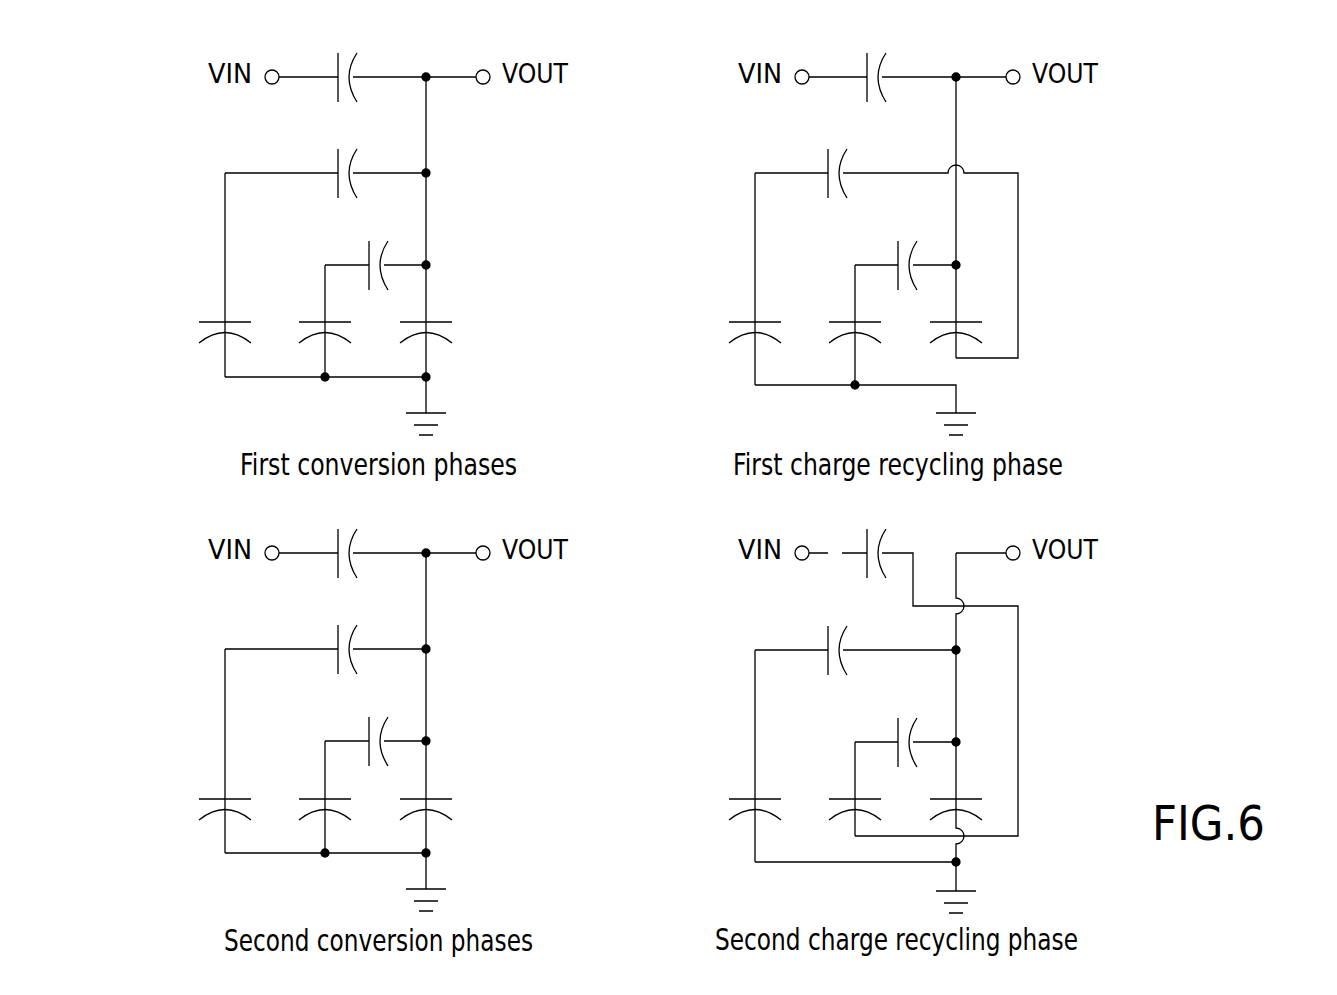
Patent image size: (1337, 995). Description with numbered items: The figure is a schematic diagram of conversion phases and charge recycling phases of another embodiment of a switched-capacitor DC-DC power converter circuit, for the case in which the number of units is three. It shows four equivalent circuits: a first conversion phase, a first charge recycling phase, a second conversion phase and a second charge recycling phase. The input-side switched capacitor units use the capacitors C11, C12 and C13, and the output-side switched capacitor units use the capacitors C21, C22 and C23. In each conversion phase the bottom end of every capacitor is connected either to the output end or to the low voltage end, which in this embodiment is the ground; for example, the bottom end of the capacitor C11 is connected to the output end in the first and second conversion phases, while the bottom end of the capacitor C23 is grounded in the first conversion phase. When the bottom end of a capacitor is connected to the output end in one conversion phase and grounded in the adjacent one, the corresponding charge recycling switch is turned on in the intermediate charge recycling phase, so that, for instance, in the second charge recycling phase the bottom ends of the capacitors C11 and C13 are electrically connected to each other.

The capacitor of the first input-side switched capacitor unit C11 is at (640, 309).
The capacitor of the second input-side switched capacitor unit C12 is at (477, 554).
The capacitor of the third input-side switched capacitor unit C13 is at (577, 554).
The capacitor of the first output-side switched capacitor unit C21 is at (665, 463).
The capacitor of the second output-side switched capacitor unit C22 is at (625, 437).
The capacitor of the third output-side switched capacitor unit C23 is at (682, 527).